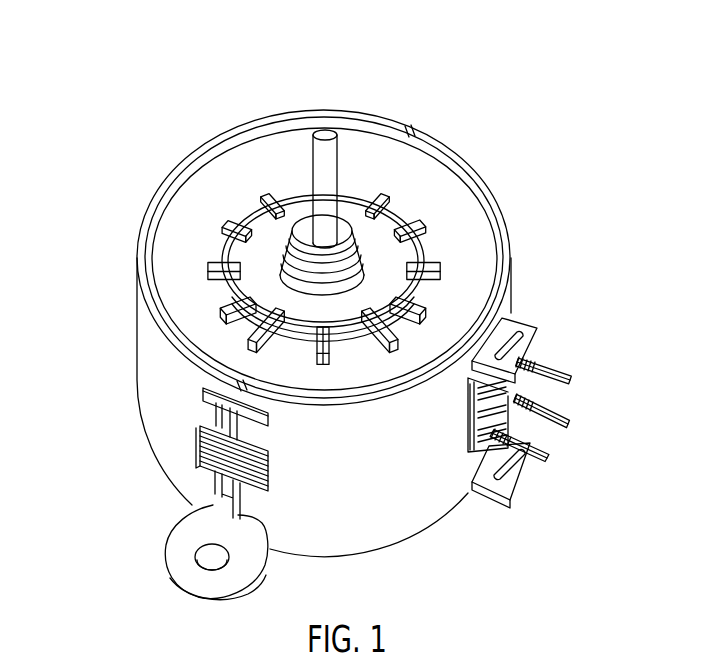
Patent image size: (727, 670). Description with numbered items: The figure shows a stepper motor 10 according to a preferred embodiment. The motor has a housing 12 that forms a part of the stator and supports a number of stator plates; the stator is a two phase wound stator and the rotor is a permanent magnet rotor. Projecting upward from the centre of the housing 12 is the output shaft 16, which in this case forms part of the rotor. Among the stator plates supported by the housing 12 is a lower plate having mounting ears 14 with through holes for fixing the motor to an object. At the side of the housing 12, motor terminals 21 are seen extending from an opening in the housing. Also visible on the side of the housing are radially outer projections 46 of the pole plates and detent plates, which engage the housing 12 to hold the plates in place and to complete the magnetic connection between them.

The stepper motor 10 is at (328, 301).
The housing 12 is at (477, 167).
The mounting ears 14 is at (170, 548).
The output shaft 16 is at (327, 177).
The motor terminals 21 is at (548, 458).
The radially outer projections 46 is at (200, 445).